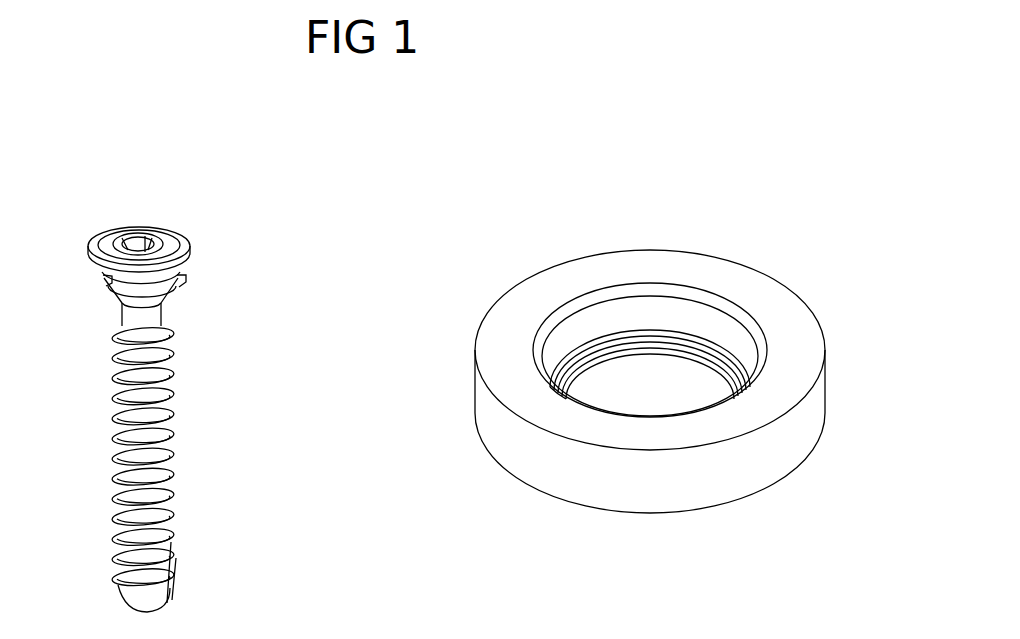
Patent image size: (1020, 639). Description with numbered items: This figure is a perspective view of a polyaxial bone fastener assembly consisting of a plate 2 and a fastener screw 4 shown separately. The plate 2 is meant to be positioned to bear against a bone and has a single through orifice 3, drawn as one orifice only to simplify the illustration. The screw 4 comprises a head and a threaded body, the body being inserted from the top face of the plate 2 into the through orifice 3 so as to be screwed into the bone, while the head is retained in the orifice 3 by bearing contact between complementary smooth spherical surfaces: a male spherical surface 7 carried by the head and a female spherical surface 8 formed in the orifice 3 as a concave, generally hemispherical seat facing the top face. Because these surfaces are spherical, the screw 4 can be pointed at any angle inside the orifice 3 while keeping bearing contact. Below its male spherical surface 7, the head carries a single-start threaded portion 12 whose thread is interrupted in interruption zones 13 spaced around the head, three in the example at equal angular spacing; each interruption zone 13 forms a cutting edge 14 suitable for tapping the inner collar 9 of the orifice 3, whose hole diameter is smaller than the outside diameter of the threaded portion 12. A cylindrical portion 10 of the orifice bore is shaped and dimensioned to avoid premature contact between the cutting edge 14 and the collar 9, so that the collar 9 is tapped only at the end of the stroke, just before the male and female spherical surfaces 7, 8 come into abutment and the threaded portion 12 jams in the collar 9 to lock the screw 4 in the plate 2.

The plate 2 is at (780, 288).
The through orifice 3 is at (707, 385).
The fastener screw 4 is at (173, 380).
The male spherical surface 7 is at (187, 260).
The female spherical surface 8 is at (652, 308).
The inner collar 9 is at (566, 388).
The cylindrical portion of the bore 10 is at (555, 382).
The threaded portion of the screw head 12 is at (190, 273).
The interruption zone 13 is at (112, 285).
The cutting edge 14 is at (175, 292).